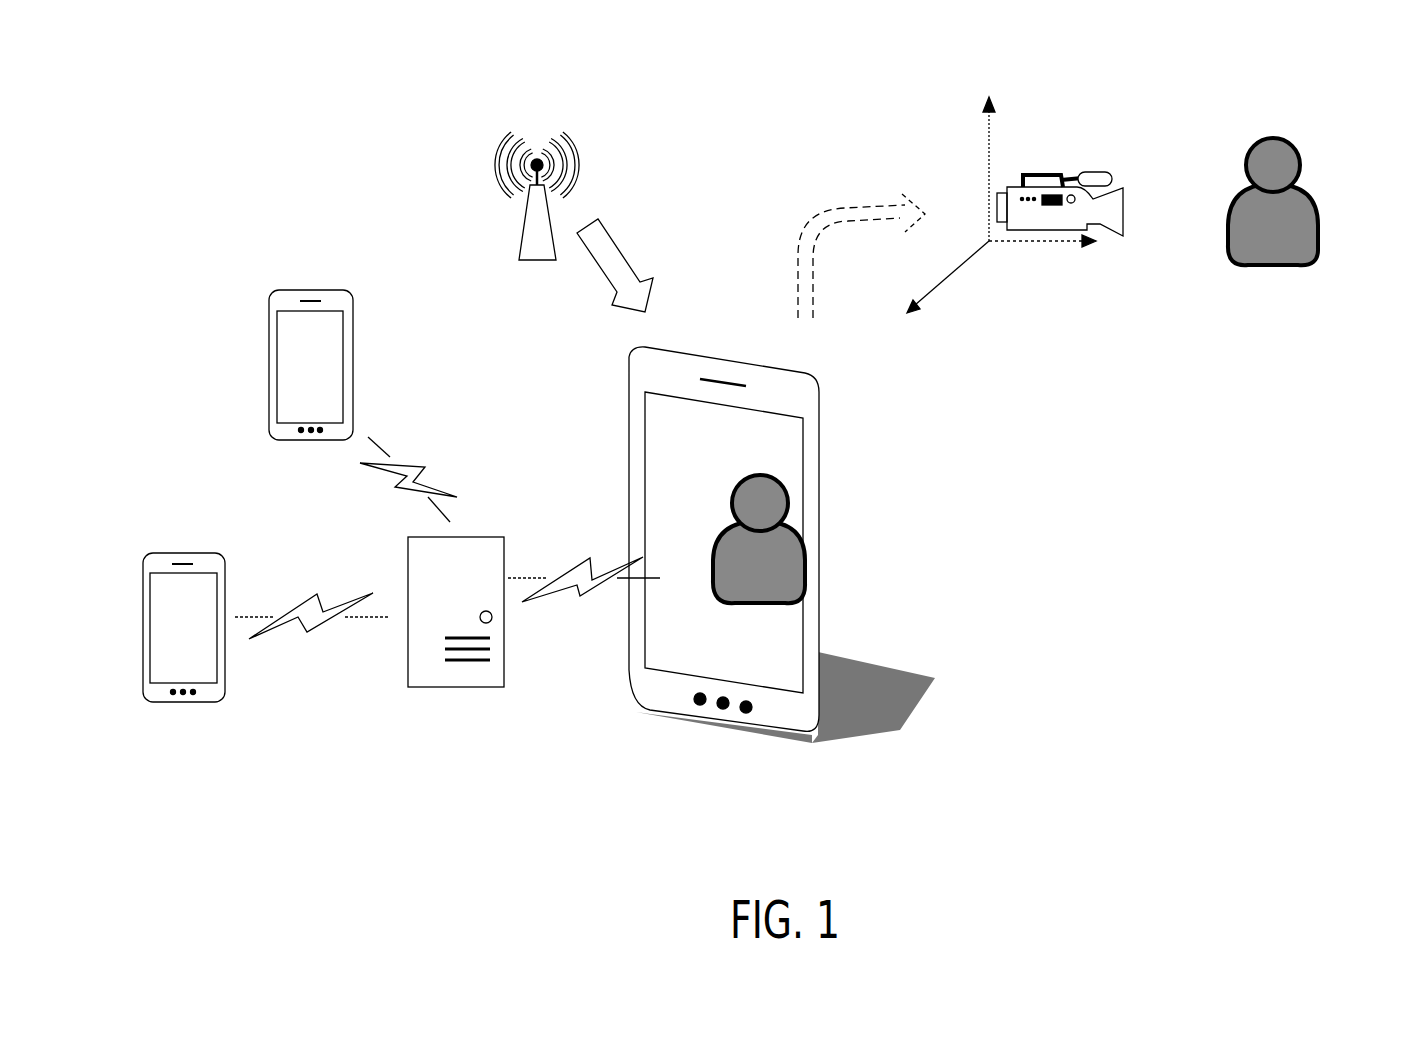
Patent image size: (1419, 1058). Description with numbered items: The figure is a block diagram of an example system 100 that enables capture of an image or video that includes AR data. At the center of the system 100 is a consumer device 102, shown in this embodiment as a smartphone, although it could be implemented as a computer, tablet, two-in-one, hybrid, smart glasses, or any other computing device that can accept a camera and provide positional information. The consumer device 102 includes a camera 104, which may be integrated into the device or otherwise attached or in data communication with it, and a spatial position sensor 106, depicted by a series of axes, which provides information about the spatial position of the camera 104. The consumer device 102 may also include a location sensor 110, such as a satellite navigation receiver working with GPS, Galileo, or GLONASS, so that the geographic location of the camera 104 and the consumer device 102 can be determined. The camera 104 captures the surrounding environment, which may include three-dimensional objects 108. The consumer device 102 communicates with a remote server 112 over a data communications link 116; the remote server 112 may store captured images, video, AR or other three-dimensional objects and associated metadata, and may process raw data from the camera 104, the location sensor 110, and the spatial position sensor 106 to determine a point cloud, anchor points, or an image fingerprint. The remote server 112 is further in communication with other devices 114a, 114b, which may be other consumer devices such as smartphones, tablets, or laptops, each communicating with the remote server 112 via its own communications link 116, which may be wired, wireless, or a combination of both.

The system 100 is at (213, 85).
The consumer device 102 is at (862, 440).
The camera 104 is at (1105, 171).
The spatial position sensor 106 is at (980, 292).
The three-dimensional objects 108 is at (1318, 211).
The location sensor 110 is at (572, 138).
The remote server 112 is at (473, 687).
The other device 114a is at (275, 437).
The other device 114b is at (153, 692).
The communications link 116 is at (275, 640).